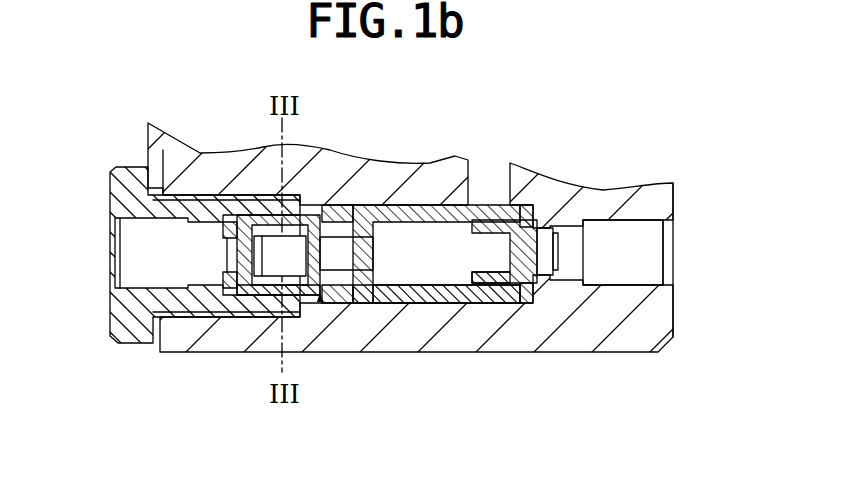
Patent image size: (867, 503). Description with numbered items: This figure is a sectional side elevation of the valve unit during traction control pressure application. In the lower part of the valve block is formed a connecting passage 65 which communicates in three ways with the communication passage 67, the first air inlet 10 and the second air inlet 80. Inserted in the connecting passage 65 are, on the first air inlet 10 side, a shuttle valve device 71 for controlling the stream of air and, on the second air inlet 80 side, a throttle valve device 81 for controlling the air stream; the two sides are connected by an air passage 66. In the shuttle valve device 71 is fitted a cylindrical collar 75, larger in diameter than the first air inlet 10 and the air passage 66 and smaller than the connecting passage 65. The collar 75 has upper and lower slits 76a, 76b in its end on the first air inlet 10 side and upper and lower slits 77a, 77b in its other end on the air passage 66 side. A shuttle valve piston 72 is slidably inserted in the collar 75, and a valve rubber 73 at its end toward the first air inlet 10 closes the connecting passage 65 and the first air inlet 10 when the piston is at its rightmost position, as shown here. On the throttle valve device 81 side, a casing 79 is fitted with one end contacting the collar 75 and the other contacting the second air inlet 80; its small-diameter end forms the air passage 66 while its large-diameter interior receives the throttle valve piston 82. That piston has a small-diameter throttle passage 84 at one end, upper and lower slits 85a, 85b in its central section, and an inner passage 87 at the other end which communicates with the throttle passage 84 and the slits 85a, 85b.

The first air inlet 10 is at (650, 252).
The connecting passage 65 is at (460, 272).
The air passage 66 is at (340, 262).
The communication passage 67 is at (490, 193).
The shuttle valve device 71 is at (540, 303).
The shuttle valve piston 72 is at (553, 300).
The valve rubber 73 is at (630, 322).
The cylindrical collar 75 is at (447, 303).
The slit 76a is at (527, 205).
The slit 76b is at (520, 303).
The slit 77a is at (400, 205).
The slit 77b is at (415, 303).
The casing 79 is at (368, 303).
The second air inlet 80 is at (130, 245).
The throttle valve device 81 is at (340, 295).
The throttle valve piston 82 is at (338, 205).
The throttle passage 84 is at (310, 215).
The slit 85a is at (272, 215).
The slit 85b is at (270, 290).
The inner passage 87 is at (200, 153).